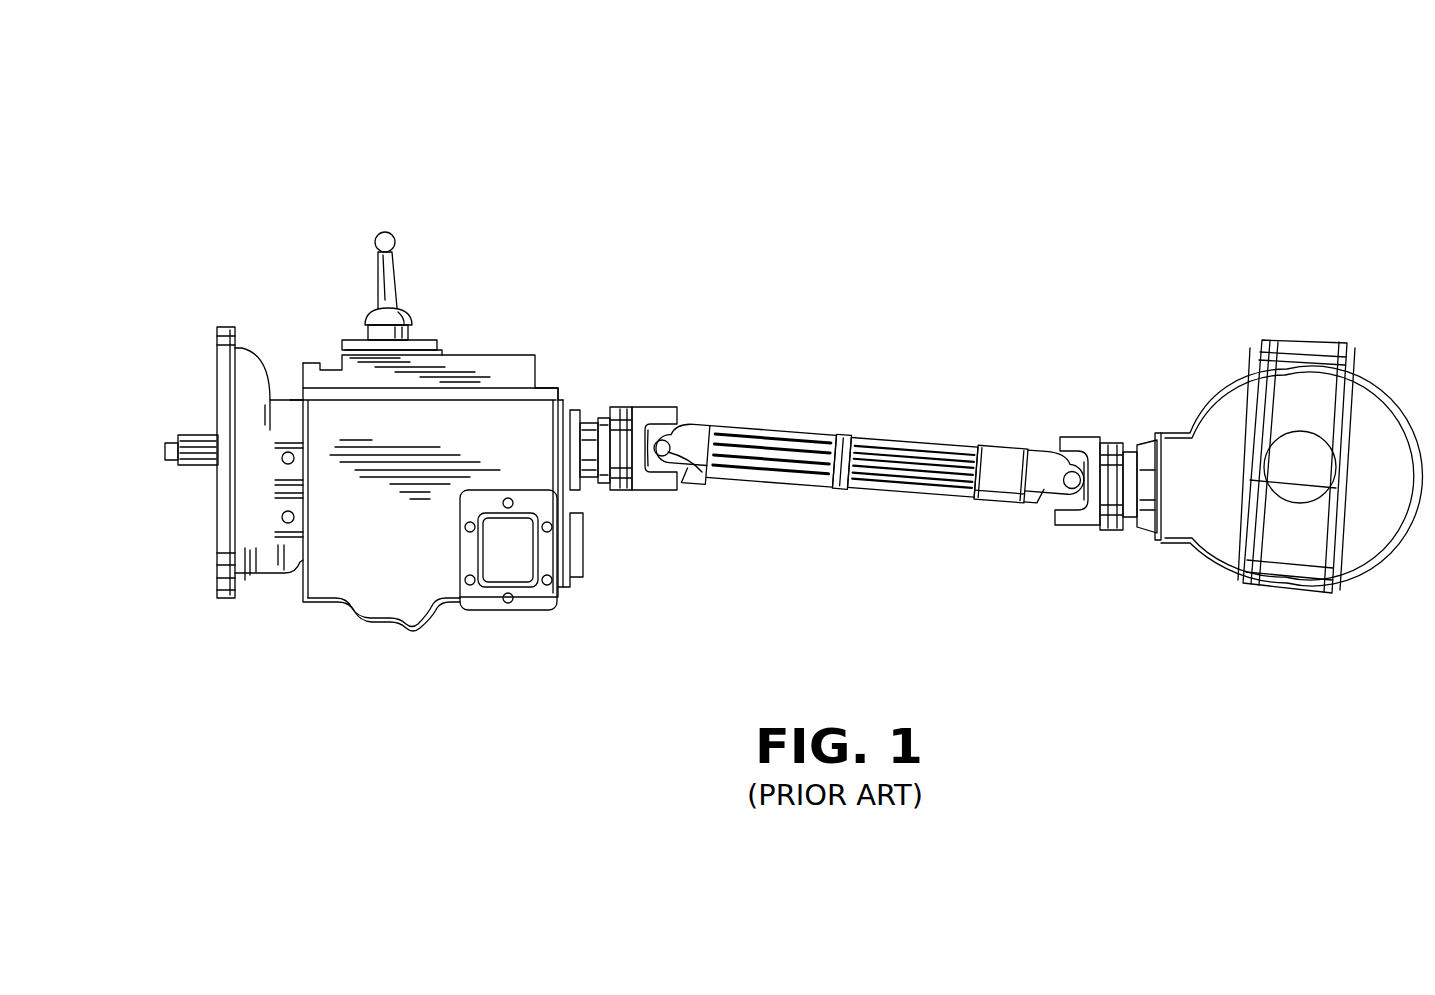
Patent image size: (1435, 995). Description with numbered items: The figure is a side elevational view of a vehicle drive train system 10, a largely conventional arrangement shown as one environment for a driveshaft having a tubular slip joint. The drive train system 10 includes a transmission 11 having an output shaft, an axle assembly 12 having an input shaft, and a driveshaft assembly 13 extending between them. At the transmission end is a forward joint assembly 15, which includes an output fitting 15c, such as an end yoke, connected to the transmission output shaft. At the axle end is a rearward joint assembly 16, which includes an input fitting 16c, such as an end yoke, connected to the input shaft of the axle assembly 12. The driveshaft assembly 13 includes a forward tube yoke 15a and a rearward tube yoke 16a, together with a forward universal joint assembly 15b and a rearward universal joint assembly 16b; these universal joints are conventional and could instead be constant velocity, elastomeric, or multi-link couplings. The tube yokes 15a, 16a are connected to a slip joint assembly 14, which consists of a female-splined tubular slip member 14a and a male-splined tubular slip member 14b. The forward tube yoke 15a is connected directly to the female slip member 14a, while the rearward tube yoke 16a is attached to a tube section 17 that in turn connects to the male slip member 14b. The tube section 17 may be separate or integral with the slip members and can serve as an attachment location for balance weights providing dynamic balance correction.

The vehicle drive train system 10 is at (445, 175).
The transmission 11 is at (383, 607).
The axle assembly 12 is at (1290, 590).
The driveshaft assembly 13 is at (1127, 320).
The slip joint assembly 14 is at (865, 418).
The female-splined tubular slip member 14a is at (782, 470).
The male-splined tubular slip member 14b is at (937, 442).
The forward joint assembly 15 is at (652, 518).
The forward tube yoke 15a is at (697, 428).
The forward universal joint assembly 15b is at (698, 470).
The output fitting 15c is at (648, 388).
The rearward joint assembly 16 is at (1082, 536).
The rearward tube yoke 16a is at (1032, 498).
The rearward universal joint assembly 16b is at (1068, 490).
The input fitting 16c is at (1090, 415).
The tube section 17 is at (1003, 450).